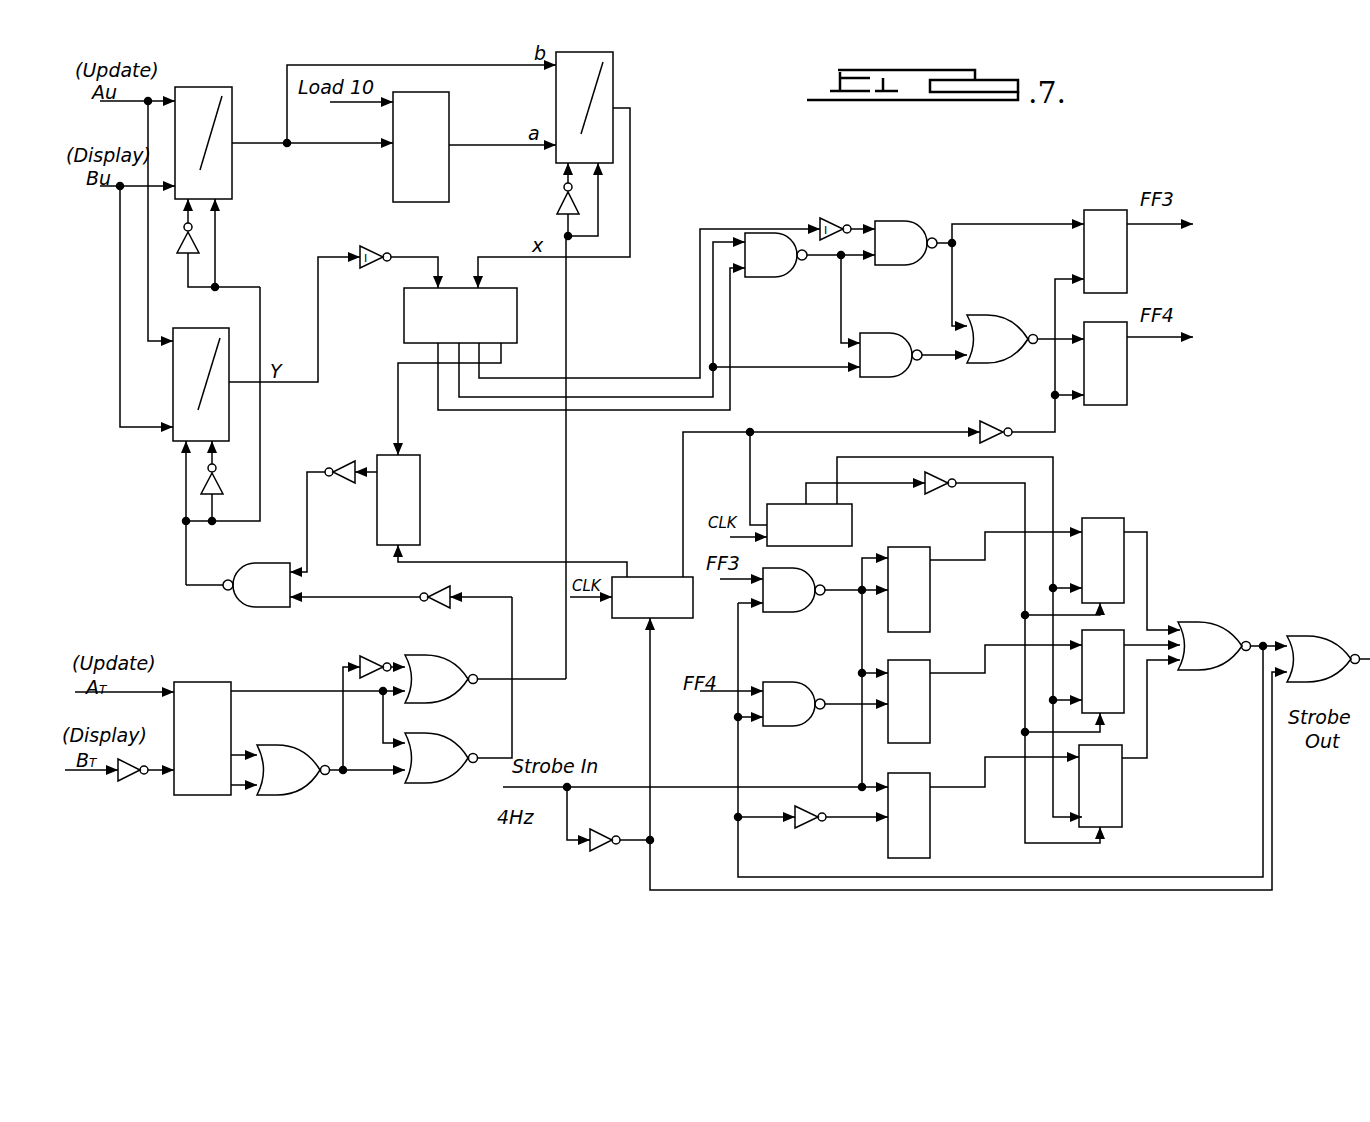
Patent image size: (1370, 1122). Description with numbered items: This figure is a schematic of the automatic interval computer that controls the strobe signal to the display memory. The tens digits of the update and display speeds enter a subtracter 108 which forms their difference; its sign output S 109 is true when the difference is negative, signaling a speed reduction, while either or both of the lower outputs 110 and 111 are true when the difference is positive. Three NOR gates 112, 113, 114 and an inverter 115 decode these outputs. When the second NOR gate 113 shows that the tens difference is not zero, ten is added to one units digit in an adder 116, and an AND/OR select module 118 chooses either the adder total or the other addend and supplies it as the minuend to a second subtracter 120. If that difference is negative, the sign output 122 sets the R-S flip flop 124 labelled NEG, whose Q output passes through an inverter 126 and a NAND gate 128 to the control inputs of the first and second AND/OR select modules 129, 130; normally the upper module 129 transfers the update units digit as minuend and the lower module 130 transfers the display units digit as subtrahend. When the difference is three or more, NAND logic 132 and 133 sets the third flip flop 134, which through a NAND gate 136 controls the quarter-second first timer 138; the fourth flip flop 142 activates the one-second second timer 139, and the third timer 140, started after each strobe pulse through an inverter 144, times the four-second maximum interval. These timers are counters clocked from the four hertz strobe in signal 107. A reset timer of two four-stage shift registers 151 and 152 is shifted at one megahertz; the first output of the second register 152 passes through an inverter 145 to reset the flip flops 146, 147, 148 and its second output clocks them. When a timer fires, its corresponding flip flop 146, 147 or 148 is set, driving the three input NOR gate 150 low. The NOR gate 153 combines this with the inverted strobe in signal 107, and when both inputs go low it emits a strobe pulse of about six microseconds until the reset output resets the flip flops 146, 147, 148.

The strobe in signal 107 is at (503, 790).
The subtracter 108 is at (195, 797).
The sign output S 109 is at (237, 688).
The lower output of subtracter 110 is at (232, 752).
The lower output of subtracter 111 is at (240, 797).
The NOR gate 112 is at (285, 797).
The second NOR gate 113 is at (445, 652).
The NOR gate 114 is at (472, 730).
The inverter 115 is at (380, 650).
The adder 116 is at (420, 205).
The AND/OR select module 118 is at (613, 136).
The second subtracter 120 is at (538, 280).
The sign output 122 is at (505, 345).
The R-S flip flop NEG 124 is at (420, 510).
The inverter 126 is at (348, 460).
The NAND gate 128 is at (235, 600).
The first AND/OR select module 129 is at (235, 190).
The second AND/OR select module 130 is at (215, 325).
The NAND logic 132 is at (765, 278).
The NAND logic 133 is at (893, 266).
The flip flop FF3 134 is at (1105, 210).
The NAND gate 136 is at (795, 612).
The first timer 138 is at (920, 547).
The second timer 139 is at (925, 660).
The third timer 140 is at (925, 773).
The flip flop FF4 142 is at (1113, 405).
The inverter 144 is at (800, 830).
The inverter 145 is at (950, 452).
The flip flop FF5 146 is at (1105, 518).
The flip flop FF6 147 is at (1124, 690).
The flip flop FF7 148 is at (1122, 795).
The three input NOR gate 150 is at (1215, 672).
The first shift register 151 is at (620, 620).
The second shift register 152 is at (866, 513).
The NOR gate 153 is at (1310, 636).